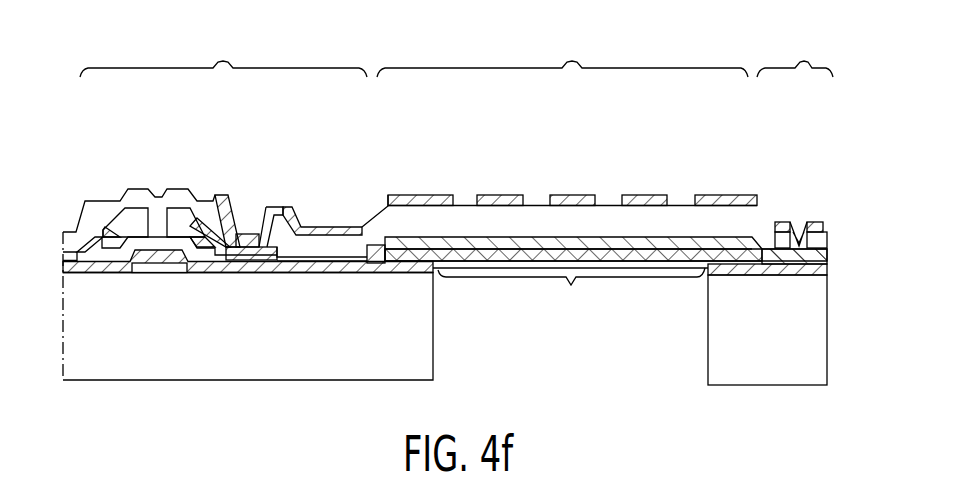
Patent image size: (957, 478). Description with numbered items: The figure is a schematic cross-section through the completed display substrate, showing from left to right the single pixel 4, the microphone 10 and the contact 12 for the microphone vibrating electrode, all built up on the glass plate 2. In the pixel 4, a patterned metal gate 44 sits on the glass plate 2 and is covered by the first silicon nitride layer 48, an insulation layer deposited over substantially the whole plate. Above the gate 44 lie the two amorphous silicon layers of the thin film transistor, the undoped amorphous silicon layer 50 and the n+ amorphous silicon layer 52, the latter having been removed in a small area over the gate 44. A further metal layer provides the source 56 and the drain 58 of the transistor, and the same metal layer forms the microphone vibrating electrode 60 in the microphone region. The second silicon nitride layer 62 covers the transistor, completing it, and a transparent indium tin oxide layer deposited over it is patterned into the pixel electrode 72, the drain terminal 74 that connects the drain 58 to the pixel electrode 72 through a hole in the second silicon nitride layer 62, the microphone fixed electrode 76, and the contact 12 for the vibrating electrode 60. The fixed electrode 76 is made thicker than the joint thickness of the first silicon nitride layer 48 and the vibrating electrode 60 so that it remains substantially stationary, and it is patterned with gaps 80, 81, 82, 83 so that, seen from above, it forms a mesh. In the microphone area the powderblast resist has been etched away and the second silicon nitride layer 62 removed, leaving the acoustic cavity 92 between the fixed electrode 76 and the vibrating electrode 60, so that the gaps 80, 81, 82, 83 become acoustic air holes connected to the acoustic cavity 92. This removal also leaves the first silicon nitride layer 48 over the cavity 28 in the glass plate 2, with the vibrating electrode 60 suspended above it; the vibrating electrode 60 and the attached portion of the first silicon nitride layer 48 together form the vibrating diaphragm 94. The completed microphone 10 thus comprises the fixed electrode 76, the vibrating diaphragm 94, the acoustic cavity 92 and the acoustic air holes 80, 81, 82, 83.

The glass plate 2 is at (108, 370).
The pixel 4 is at (223, 56).
The microphone 10 is at (562, 56).
The contact for the microphone vibrating electrode 12 is at (808, 222).
The cavity 28 is at (605, 346).
The gate 44 is at (155, 272).
The first silicon nitride layer 48 is at (321, 262).
The undoped amorphous silicon layer 50 is at (200, 252).
The n+ amorphous silicon layer 52 is at (111, 248).
The source 56 is at (135, 217).
The drain 58 is at (175, 222).
The microphone vibrating electrode 60 is at (380, 242).
The second silicon nitride layer 62 is at (188, 198).
The pixel electrode 72 is at (330, 227).
The drain terminal 74 is at (245, 232).
The microphone fixed electrode 76 is at (428, 194).
The gap 80 is at (465, 198).
The gap 81 is at (537, 198).
The gap 82 is at (608, 198).
The gap 83 is at (679, 198).
The acoustic cavity 92 is at (513, 232).
The vibrating diaphragm 94 is at (571, 291).